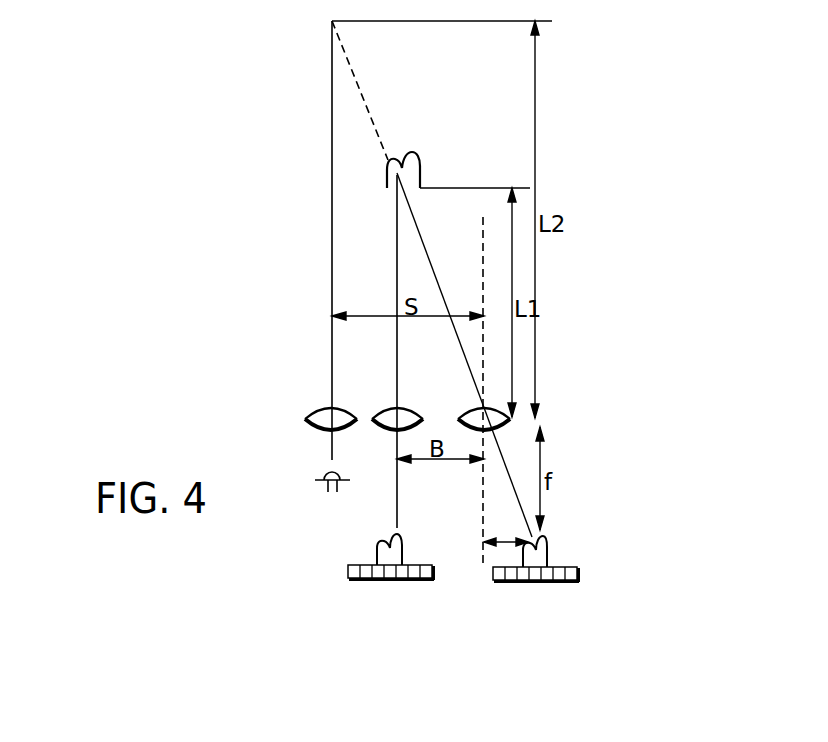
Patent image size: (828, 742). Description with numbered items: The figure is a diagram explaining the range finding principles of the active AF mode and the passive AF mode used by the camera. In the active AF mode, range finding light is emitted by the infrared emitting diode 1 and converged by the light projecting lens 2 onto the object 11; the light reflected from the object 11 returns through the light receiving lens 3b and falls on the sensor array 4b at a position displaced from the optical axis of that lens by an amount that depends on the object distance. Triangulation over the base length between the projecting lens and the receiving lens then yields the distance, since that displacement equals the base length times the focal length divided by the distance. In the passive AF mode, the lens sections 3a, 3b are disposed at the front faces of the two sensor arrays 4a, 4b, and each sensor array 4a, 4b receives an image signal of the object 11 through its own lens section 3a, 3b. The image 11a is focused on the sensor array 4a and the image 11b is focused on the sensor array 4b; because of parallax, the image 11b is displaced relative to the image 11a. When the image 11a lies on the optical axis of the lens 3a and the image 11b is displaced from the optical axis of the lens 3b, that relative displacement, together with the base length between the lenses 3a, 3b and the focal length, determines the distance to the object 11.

The active AF infrared emitting diode 1 is at (320, 481).
The light projecting lens 2 is at (310, 418).
The lens section 3a is at (381, 416).
The lens section 3b is at (467, 416).
The sensor array section 4a is at (350, 567).
The sensor array section 4b is at (578, 567).
The object 11 is at (422, 165).
The image of the object 11a is at (403, 548).
The image of the object 11b is at (548, 545).